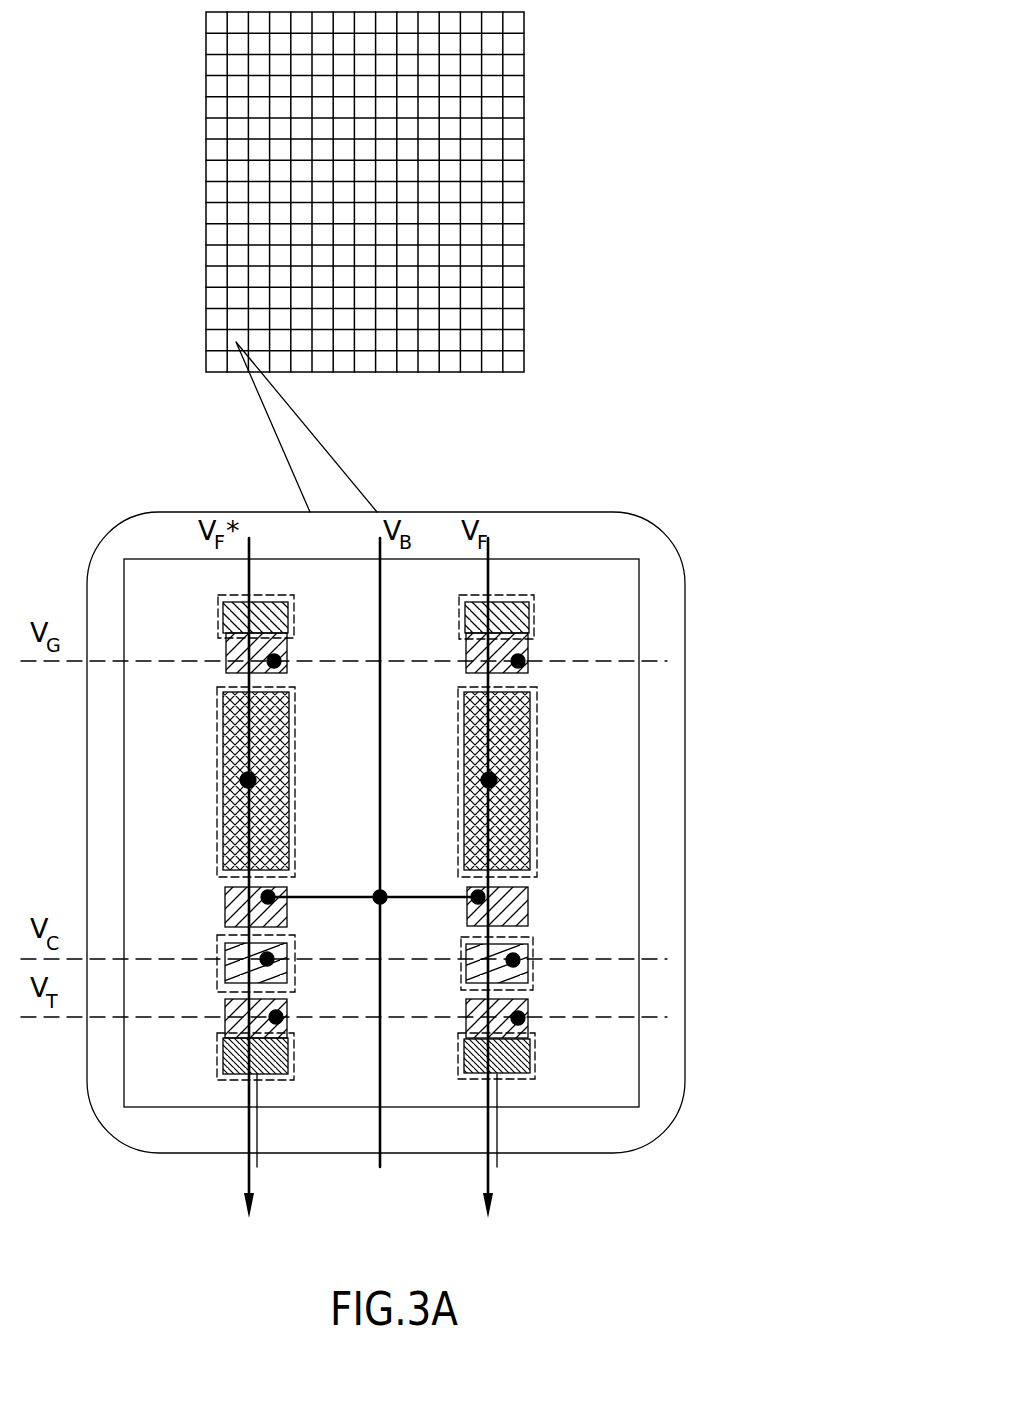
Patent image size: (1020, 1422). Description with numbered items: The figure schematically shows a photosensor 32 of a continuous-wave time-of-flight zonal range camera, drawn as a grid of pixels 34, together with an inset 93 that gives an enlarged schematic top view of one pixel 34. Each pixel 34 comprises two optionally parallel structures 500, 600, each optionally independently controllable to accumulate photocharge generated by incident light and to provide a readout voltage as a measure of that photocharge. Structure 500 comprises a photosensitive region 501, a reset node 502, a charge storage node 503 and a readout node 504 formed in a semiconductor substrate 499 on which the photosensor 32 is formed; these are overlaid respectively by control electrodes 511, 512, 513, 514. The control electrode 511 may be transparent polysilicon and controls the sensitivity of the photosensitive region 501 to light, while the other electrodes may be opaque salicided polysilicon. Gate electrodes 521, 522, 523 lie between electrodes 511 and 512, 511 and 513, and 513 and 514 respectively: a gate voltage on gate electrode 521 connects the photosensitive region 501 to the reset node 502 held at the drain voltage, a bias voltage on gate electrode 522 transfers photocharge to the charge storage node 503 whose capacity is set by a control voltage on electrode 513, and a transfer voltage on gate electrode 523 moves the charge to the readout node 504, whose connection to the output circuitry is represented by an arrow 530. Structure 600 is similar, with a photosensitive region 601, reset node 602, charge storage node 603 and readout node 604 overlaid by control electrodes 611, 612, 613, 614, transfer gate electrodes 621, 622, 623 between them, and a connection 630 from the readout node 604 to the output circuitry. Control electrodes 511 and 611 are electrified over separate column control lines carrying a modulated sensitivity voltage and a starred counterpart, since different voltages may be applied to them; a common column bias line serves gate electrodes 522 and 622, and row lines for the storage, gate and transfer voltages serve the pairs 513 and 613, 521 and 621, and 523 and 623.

The photosensor 32 is at (172, 265).
The pixel 34 is at (236, 342).
The inset 93 is at (687, 670).
The semiconductor substrate 499 is at (441, 756).
The structure 500 is at (515, 575).
The photosensitive region 501 is at (538, 817).
The reset node 502 is at (459, 612).
The charge storage node 503 is at (461, 948).
The readout node 504 is at (458, 1057).
The control electrode 511 is at (531, 737).
The control electrode 512 is at (530, 612).
The control electrode 513 is at (520, 948).
The control electrode 514 is at (523, 1060).
The gate electrode 521 is at (529, 655).
The gate electrode 522 is at (529, 890).
The gate electrode 523 is at (515, 1003).
The arrow 530 is at (500, 1175).
The structure 600 is at (260, 565).
The photosensitive region 601 is at (295, 817).
The reset node 602 is at (218, 618).
The charge storage node 603 is at (217, 960).
The readout node 604 is at (217, 1057).
The control electrode 611 is at (289, 737).
The control electrode 612 is at (286, 615).
The control electrode 613 is at (280, 953).
The control electrode 614 is at (282, 1057).
The transfer gate electrode 621 is at (288, 655).
The transfer gate electrode 622 is at (288, 890).
The transfer gate electrode 623 is at (287, 1027).
The connection 630 is at (258, 1175).